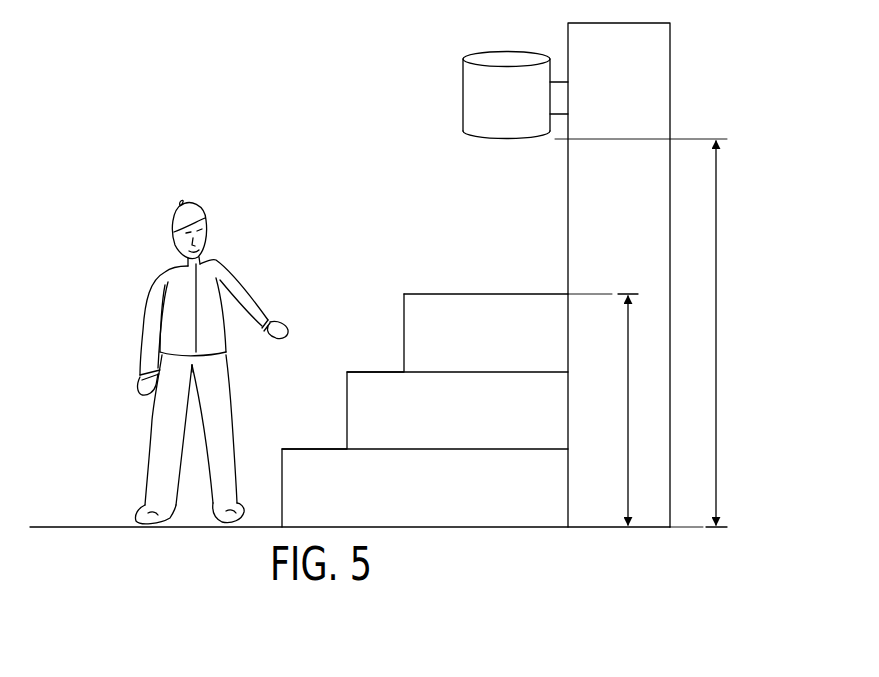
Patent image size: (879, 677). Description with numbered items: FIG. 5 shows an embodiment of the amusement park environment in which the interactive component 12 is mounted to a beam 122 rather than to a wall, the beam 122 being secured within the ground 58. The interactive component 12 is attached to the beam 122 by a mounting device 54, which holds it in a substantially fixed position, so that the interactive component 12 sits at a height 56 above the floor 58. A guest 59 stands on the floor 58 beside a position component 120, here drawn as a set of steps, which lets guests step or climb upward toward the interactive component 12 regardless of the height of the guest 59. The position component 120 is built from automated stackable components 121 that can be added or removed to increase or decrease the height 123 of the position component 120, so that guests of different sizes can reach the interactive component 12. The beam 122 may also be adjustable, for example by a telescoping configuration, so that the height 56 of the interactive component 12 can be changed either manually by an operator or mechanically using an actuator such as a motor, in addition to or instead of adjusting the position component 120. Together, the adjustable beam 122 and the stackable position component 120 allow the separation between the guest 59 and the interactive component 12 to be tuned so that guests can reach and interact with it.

The interactive component 12 is at (506, 51).
The mounting device 54 is at (558, 117).
The height 56 is at (717, 340).
The floor 58 is at (63, 527).
The guest 59 is at (168, 265).
The position component 120 is at (487, 293).
The automated stackable components 121 is at (425, 340).
The beam 122 is at (670, 84).
The height of the position component 123 is at (628, 412).